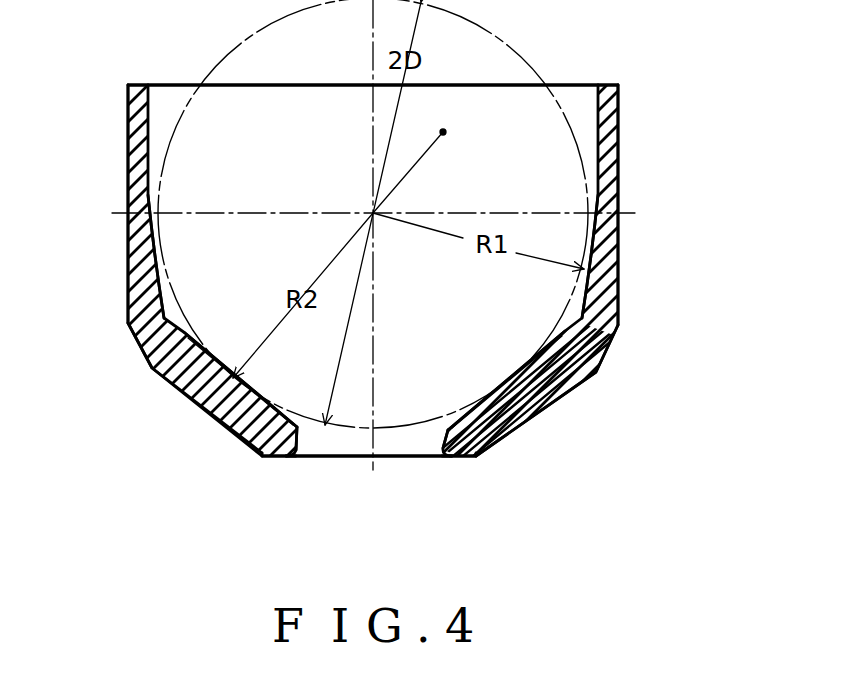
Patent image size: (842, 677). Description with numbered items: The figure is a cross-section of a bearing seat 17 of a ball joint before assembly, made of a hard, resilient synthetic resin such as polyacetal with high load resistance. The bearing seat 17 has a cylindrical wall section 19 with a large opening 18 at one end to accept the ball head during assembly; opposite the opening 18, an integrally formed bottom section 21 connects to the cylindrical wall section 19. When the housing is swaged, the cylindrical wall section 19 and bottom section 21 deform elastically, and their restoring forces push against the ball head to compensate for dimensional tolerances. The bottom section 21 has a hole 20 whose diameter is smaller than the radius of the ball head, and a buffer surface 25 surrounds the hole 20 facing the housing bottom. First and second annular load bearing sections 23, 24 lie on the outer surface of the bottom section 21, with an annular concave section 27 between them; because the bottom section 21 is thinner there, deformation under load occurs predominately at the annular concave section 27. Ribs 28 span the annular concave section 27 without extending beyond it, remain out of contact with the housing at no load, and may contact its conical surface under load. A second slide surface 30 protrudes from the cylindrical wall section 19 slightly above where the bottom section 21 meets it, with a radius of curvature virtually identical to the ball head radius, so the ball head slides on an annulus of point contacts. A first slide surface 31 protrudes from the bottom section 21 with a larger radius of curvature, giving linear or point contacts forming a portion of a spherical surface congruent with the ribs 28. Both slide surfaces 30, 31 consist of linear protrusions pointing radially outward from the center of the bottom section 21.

The bearing seat 17 is at (618, 183).
The large opening 18 is at (597, 100).
The cylindrical wall section 19 is at (618, 148).
The hole 20 is at (417, 457).
The bottom section 21 is at (217, 420).
The first annular load bearing section 23 is at (160, 387).
The second annular load bearing section 24 is at (258, 452).
The buffer surface 25 is at (289, 455).
The annular concave section 27 is at (207, 407).
The ribs 28 is at (227, 420).
The second slide surface 30 is at (163, 262).
The first slide surface 31 is at (206, 350).